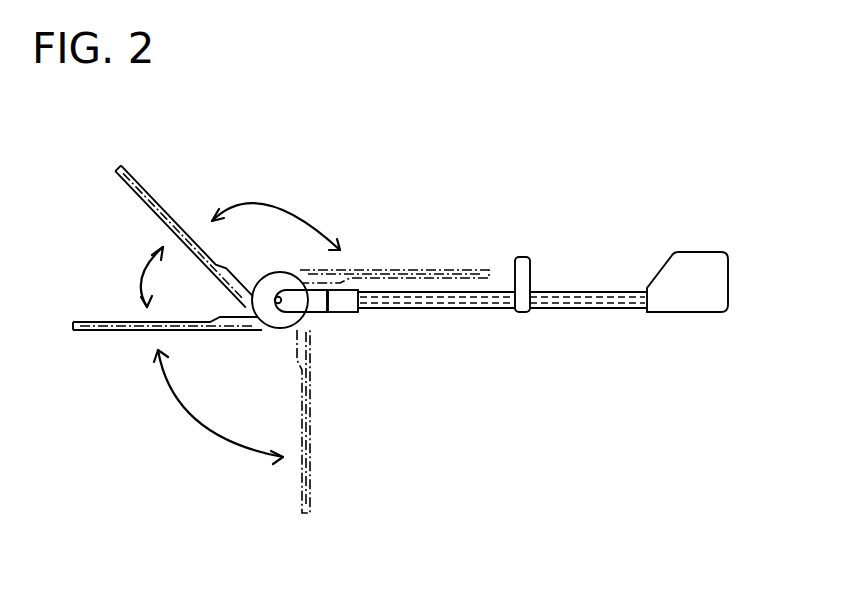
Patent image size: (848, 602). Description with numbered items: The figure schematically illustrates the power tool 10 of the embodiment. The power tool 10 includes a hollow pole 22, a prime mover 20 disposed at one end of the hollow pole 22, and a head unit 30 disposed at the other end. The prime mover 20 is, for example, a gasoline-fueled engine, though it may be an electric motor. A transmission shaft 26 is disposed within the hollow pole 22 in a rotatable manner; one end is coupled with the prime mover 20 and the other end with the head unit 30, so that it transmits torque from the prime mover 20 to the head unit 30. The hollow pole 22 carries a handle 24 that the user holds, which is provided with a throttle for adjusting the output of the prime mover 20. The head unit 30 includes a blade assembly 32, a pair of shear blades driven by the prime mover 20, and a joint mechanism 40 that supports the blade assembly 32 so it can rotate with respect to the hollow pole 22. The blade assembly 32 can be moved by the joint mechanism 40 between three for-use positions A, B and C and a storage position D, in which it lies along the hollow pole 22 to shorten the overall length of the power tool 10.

The power tool 10 is at (636, 135).
The prime mover 20 is at (700, 258).
The hollow pole 22 is at (590, 291).
The handle 24 is at (521, 257).
The transmission shaft 26 is at (480, 312).
The head unit 30 is at (316, 313).
The blade assembly 32 is at (147, 190).
The joint mechanism 40 is at (278, 305).